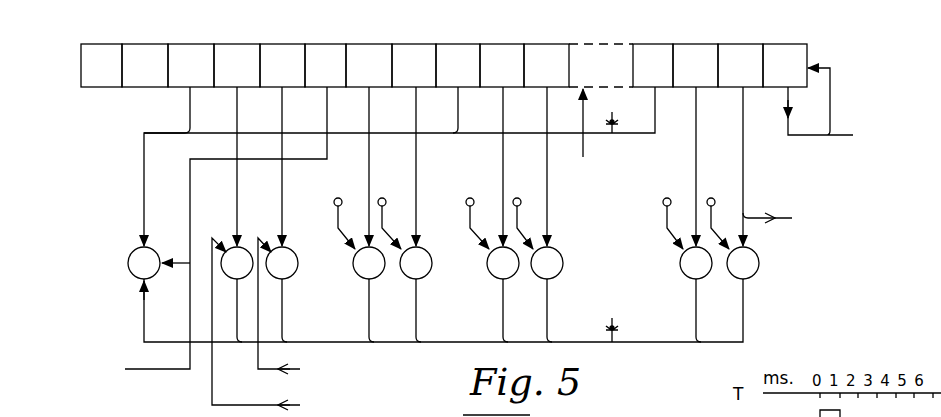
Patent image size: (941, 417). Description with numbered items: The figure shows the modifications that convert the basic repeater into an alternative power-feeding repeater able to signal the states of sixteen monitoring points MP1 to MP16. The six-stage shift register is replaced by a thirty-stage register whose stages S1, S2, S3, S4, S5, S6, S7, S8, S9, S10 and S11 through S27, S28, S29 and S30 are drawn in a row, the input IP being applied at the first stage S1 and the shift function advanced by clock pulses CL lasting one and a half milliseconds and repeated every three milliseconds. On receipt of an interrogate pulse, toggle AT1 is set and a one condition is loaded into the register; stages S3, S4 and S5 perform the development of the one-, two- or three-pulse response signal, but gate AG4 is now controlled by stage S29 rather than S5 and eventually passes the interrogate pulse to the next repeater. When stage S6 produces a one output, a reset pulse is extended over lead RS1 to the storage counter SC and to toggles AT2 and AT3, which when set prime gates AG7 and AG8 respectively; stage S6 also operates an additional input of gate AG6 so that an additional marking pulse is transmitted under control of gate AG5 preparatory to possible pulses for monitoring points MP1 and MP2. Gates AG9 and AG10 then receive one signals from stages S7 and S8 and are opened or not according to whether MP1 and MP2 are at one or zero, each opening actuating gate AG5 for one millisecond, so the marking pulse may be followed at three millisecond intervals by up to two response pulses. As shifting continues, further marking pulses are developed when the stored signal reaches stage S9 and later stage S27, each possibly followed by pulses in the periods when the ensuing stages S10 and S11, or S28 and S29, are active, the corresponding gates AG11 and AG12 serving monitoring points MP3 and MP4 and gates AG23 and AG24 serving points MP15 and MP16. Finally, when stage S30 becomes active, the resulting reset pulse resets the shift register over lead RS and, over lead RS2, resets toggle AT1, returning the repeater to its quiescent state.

The input pulse IP is at (80, 68).
The shift register stage S1 is at (101, 65).
The shift register stage S2 is at (145, 65).
The shift register stage S3 is at (191, 65).
The shift register stage S4 is at (237, 65).
The shift register stage S5 is at (282, 65).
The shift register stage S6 is at (325, 65).
The shift register stage S7 is at (369, 65).
The shift register stage S8 is at (414, 65).
The shift register stage S9 is at (458, 65).
The shift register stage S10 is at (502, 65).
The shift register stage S11 is at (546, 65).
The shift register stage S27 is at (653, 65).
The shift register stage S28 is at (695, 65).
The shift register stage S29 is at (740, 65).
The shift register stage S30 is at (785, 65).
The reset lead RS is at (820, 86).
The reset lead RS1 is at (174, 386).
The reset lead RS2 is at (851, 122).
The toggle AT1 is at (866, 152).
The toggle AT2 is at (209, 327).
The toggle AT3 is at (210, 327).
The clock signal CL is at (583, 135).
The storage counter SC is at (107, 370).
The monitoring point MP1 is at (337, 212).
The monitoring point MP2 is at (389, 212).
The monitoring point MP3 is at (476, 212).
The monitoring point MP4 is at (525, 212).
The monitoring point MP15 is at (670, 212).
The monitoring point MP16 is at (722, 212).
The gate AG4 is at (787, 218).
The gate AG5 is at (128, 263).
The gate AG6 is at (163, 292).
The gate AG7 is at (232, 195).
The gate AG8 is at (292, 195).
The gate AG9 is at (379, 195).
The gate AG10 is at (431, 195).
The AND gate 11 AG11 is at (518, 195).
The AND gate 12 AG12 is at (562, 195).
The AND gate 23 AG23 is at (711, 195).
The AND gate 24 AG24 is at (758, 195).